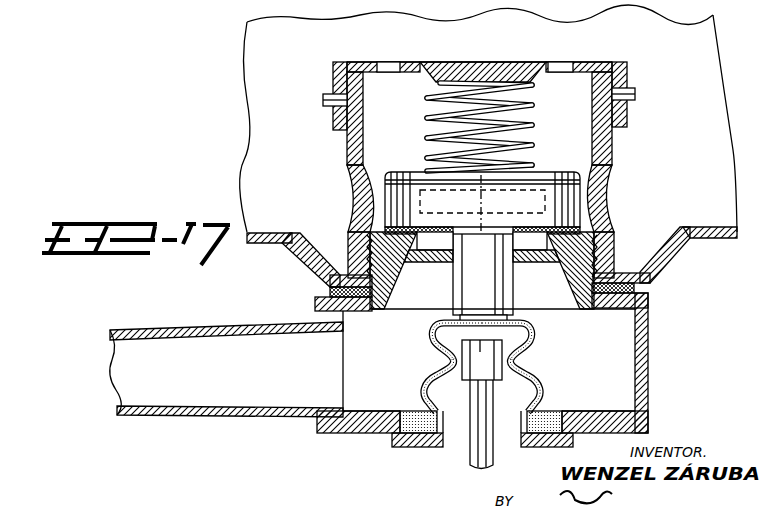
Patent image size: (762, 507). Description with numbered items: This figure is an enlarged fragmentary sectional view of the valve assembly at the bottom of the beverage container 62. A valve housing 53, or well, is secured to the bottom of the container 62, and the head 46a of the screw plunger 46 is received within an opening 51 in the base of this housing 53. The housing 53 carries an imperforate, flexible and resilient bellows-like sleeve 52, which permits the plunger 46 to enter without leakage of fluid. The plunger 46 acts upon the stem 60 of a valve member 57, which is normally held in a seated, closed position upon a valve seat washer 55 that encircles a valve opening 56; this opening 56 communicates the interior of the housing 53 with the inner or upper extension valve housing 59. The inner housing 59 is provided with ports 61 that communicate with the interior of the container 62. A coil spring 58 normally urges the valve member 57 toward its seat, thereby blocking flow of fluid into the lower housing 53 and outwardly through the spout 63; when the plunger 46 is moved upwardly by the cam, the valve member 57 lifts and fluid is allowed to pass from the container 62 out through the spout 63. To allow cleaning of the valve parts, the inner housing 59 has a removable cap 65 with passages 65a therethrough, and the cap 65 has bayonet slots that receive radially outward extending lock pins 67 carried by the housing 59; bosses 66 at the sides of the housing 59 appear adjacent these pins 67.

The screw plunger 46 is at (473, 467).
The head of the plunger 46a is at (521, 352).
The opening 51 is at (447, 437).
The bellows-like sleeve 52 is at (528, 373).
The valve housing 53 is at (650, 372).
The valve seat washer 55 is at (614, 229).
The valve opening 56 is at (433, 252).
The valve member 57 is at (552, 172).
The coil spring 58 is at (522, 111).
The inner valve housing 59 is at (348, 143).
The stem 60 is at (453, 297).
The ports 61 is at (356, 192).
The beverage container 62 is at (258, 246).
The spout 63 is at (140, 413).
The removable cap 65 is at (412, 63).
The passages 65a is at (557, 62).
The boss 66 is at (335, 86).
The lock pins 67 is at (324, 100).